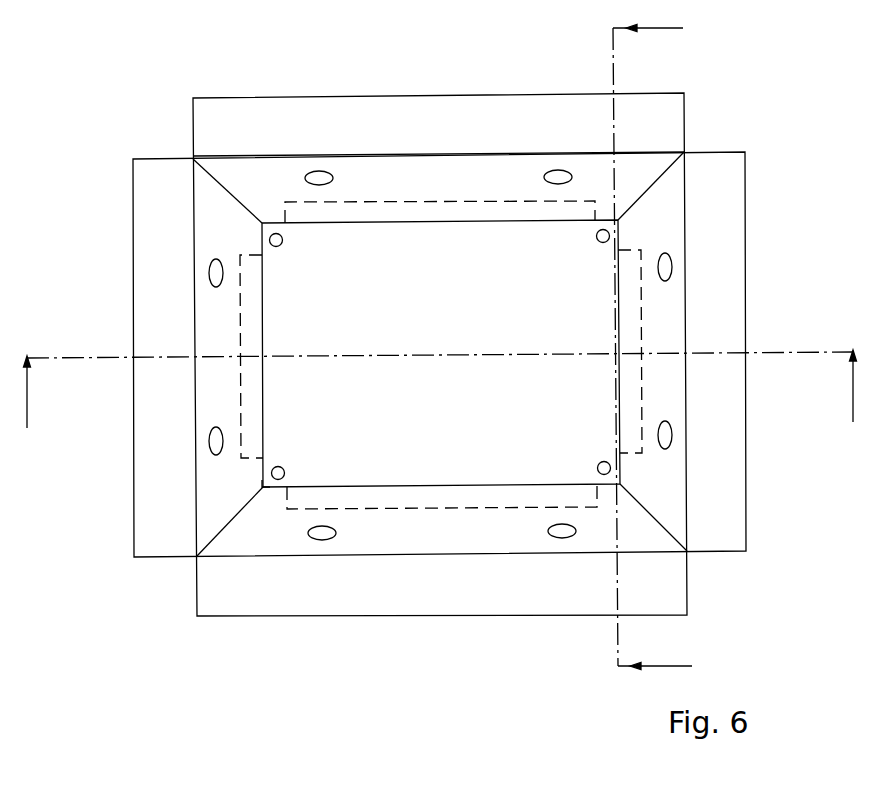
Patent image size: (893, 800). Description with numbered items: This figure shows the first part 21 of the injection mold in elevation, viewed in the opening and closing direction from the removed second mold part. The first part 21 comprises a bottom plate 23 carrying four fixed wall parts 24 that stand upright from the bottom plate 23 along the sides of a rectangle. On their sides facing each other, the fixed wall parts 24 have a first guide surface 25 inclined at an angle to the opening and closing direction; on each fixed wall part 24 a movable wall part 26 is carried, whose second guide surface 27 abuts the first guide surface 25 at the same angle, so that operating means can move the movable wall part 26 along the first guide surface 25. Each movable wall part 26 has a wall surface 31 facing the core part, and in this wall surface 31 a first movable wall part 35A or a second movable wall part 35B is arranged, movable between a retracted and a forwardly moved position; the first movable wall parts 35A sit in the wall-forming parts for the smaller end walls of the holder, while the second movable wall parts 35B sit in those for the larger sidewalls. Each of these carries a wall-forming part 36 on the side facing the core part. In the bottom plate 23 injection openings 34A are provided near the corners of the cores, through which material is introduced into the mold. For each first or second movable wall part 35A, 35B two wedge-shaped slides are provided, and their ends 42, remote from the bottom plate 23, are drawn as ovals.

The first part 21 is at (762, 133).
The bottom plate 23 is at (371, 253).
The fixed wall part 24 is at (264, 117).
The first guide surface 25 is at (438, 88).
The second guide surface 27 is at (470, 156).
The movable wall part 26 is at (418, 180).
The wall surface 31 is at (249, 486).
The injection opening 34A is at (282, 246).
The first movable wall part 35A is at (250, 325).
The second movable wall part 35B is at (472, 210).
The wall-forming part 36 is at (396, 236).
The end of the slide 42 is at (319, 178).